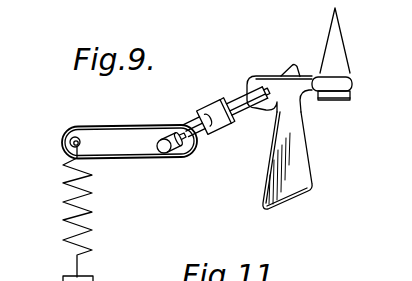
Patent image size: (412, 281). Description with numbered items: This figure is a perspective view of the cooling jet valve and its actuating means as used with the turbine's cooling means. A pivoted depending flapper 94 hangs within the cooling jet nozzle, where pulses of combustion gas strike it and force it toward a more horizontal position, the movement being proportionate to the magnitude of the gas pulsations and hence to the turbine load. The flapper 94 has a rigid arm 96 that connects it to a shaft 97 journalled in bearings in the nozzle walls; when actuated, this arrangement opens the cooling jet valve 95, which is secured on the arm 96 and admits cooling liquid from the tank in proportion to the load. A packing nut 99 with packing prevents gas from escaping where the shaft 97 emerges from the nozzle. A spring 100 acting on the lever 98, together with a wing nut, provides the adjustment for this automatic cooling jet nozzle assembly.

The flapper 94 is at (312, 172).
The cooling jet valve 95 is at (337, 75).
The rigid arm 96 is at (263, 114).
The shaft 97 is at (242, 97).
The lever arm 98 is at (133, 126).
The packing nut 99 is at (205, 103).
The spring 100 is at (63, 203).